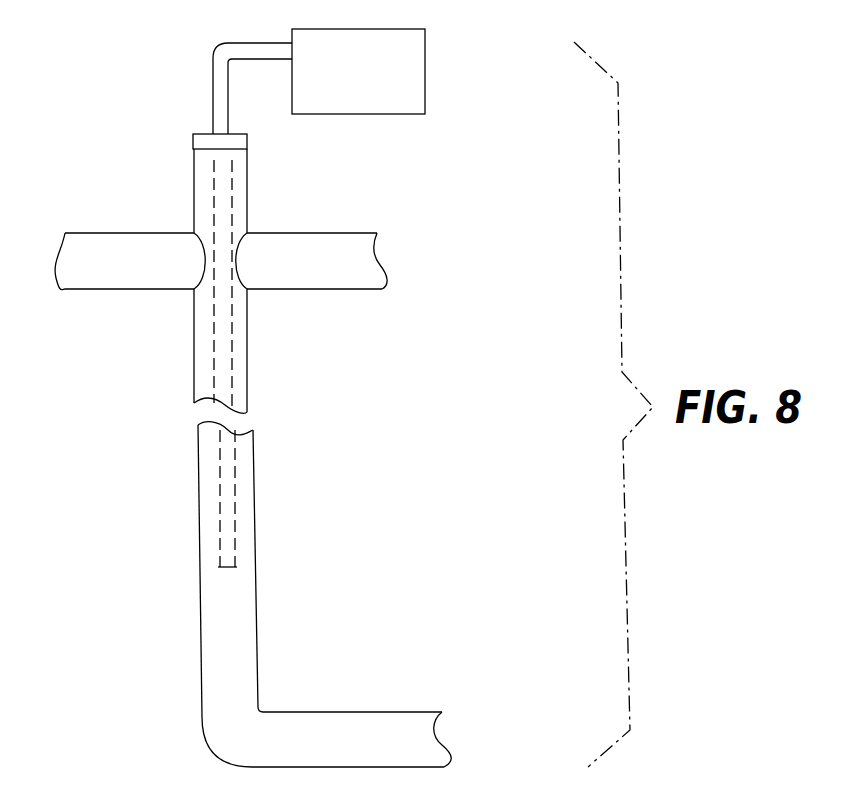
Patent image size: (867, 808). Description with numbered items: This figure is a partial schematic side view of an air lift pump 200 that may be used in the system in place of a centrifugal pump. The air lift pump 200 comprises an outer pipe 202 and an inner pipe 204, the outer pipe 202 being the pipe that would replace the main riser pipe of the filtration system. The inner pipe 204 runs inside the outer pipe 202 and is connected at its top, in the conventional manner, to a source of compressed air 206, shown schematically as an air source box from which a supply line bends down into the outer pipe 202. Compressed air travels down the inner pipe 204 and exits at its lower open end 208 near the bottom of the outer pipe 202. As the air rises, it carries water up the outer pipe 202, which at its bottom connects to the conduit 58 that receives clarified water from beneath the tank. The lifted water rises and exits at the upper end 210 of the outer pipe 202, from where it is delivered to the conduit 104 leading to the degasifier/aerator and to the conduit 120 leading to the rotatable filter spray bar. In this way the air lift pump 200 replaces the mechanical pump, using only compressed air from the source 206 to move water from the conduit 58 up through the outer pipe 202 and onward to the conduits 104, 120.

The conduit 58 is at (443, 738).
The conduit 104 is at (380, 232).
The conduit 120 is at (142, 236).
The air lift pump 200 is at (360, 365).
The outer pipe 202 is at (251, 366).
The inner pipe 204 is at (228, 107).
The source of compressed air 206 is at (425, 62).
The lower open end 208 is at (223, 572).
The upper end 210 is at (193, 134).